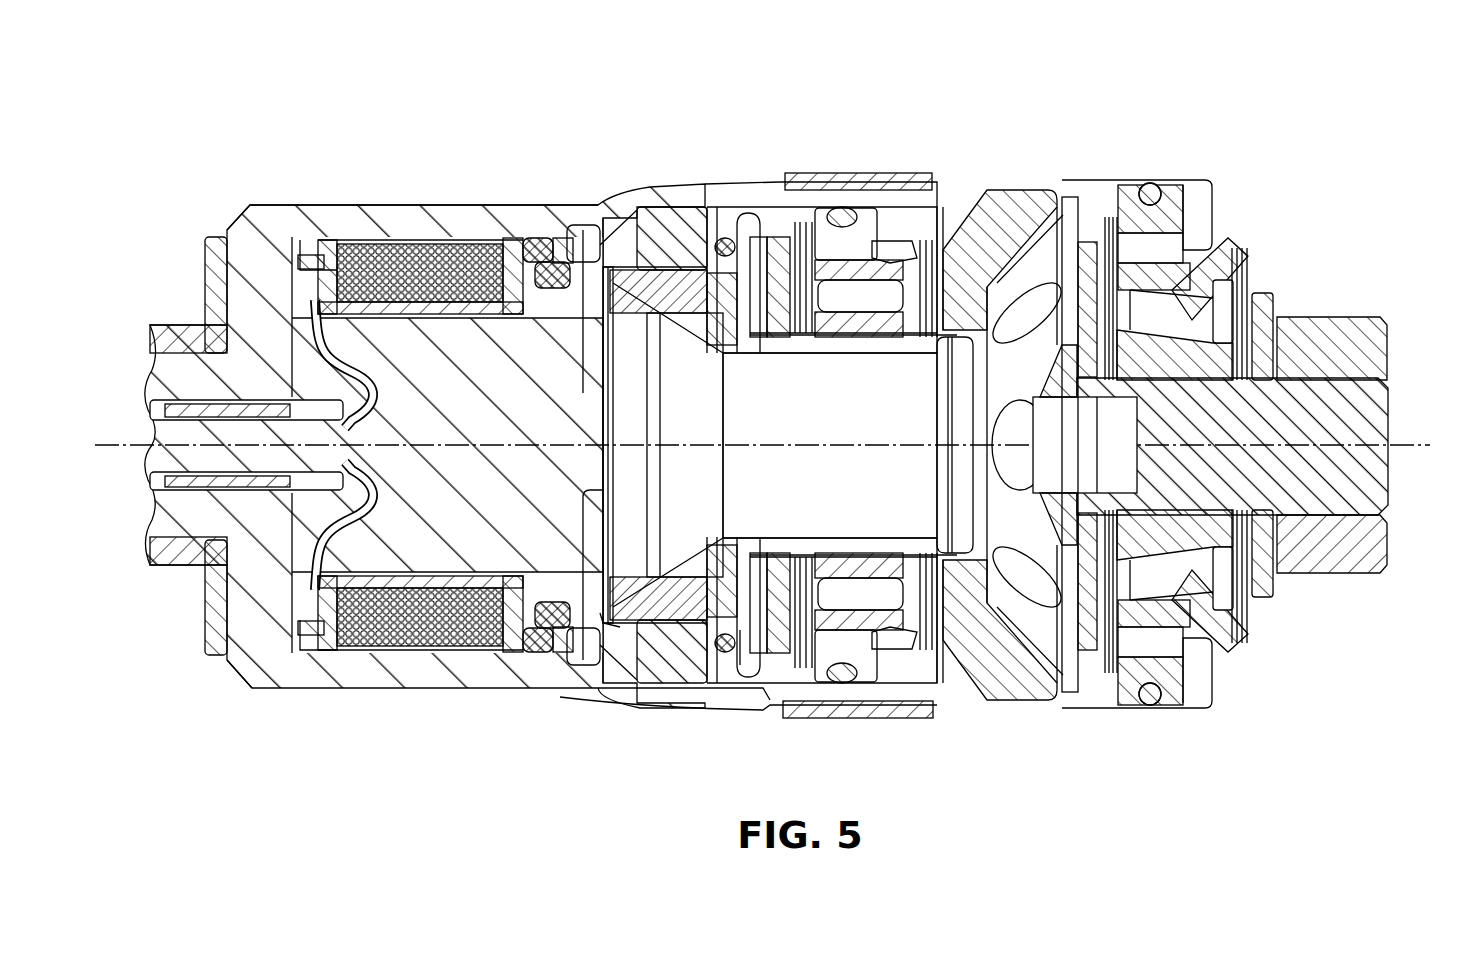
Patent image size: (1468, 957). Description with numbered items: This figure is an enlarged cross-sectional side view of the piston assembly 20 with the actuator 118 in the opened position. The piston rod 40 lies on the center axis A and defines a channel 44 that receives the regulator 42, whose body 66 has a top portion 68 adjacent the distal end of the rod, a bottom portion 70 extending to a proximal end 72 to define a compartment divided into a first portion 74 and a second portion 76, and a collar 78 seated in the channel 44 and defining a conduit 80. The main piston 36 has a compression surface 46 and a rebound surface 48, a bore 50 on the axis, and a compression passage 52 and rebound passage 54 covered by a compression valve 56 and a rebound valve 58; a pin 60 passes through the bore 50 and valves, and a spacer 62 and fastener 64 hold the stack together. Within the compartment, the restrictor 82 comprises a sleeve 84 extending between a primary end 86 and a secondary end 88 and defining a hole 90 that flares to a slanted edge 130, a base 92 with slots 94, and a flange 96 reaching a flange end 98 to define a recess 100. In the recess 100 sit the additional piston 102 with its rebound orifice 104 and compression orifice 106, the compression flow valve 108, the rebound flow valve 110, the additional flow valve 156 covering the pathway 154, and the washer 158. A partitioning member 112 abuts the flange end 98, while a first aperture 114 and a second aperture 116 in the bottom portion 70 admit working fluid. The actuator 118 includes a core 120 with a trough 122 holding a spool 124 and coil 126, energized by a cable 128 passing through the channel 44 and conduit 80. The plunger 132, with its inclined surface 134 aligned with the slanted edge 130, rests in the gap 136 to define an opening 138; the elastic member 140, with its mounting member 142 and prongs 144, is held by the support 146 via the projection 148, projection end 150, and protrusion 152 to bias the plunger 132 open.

The piston assembly 20 is at (222, 198).
The main piston 36 is at (1196, 684).
The piston rod 40 is at (160, 330).
The regulator 42 is at (457, 453).
The channel 44 is at (173, 528).
The compression surface 46 is at (1085, 200).
The rebound surface 48 is at (1250, 263).
The bore 50 is at (1255, 330).
The compression passage 52 is at (1150, 183).
The rebound passage 54 is at (1215, 255).
The compression valve 56 is at (1100, 705).
The rebound valve 58 is at (1238, 640).
The pin 60 is at (1375, 415).
The spacer 62 is at (1255, 600).
The fastener 64 is at (1362, 565).
The body 66 is at (457, 490).
The top portion 68 is at (243, 660).
The bottom portion 70 is at (375, 692).
The proximal end 72 is at (1190, 180).
The first portion 74 is at (785, 213).
The second portion 76 is at (903, 213).
The collar 78 is at (190, 373).
The conduit 80 is at (208, 545).
The restrictor 82 is at (680, 200).
The sleeve 84 is at (837, 350).
The primary end 86 is at (660, 575).
The secondary end 88 is at (958, 350).
The hole 90 is at (745, 342).
The base 92 is at (1006, 443).
The slots 94 is at (1027, 707).
The flange 96 is at (715, 230).
The flange end 98 is at (748, 240).
The recess 100 is at (805, 340).
The additional piston 102 is at (845, 198).
The rebound orifice 104 is at (880, 583).
The compression orifice 106 is at (870, 205).
The compression flow valve 108 is at (783, 667).
The rebound flow valve 110 is at (912, 660).
The partitioning member 112 is at (620, 230).
The first aperture 114 is at (607, 687).
The second aperture 116 is at (748, 195).
The actuator 118 is at (295, 600).
The core 120 is at (540, 655).
The trough 122 is at (433, 313).
The spool 124 is at (318, 240).
The coil 126 is at (365, 262).
The cable 128 is at (372, 403).
The slanted edge 130 is at (703, 322).
The plunger 132 is at (660, 617).
The inclined surface 134 is at (630, 583).
The gap 136 is at (712, 600).
The opening 138 is at (583, 222).
The elastic member 140 is at (624, 480).
The mounting member 142 is at (603, 473).
The prongs 144 is at (603, 348).
The support 146 is at (598, 415).
The projection 148 is at (597, 418).
The projection end 150 is at (645, 420).
The protrusion 152 is at (660, 455).
The pathway 154 is at (738, 600).
The additional flow valve 156 is at (750, 657).
The washer 158 is at (775, 575).
The center axis A is at (130, 430).